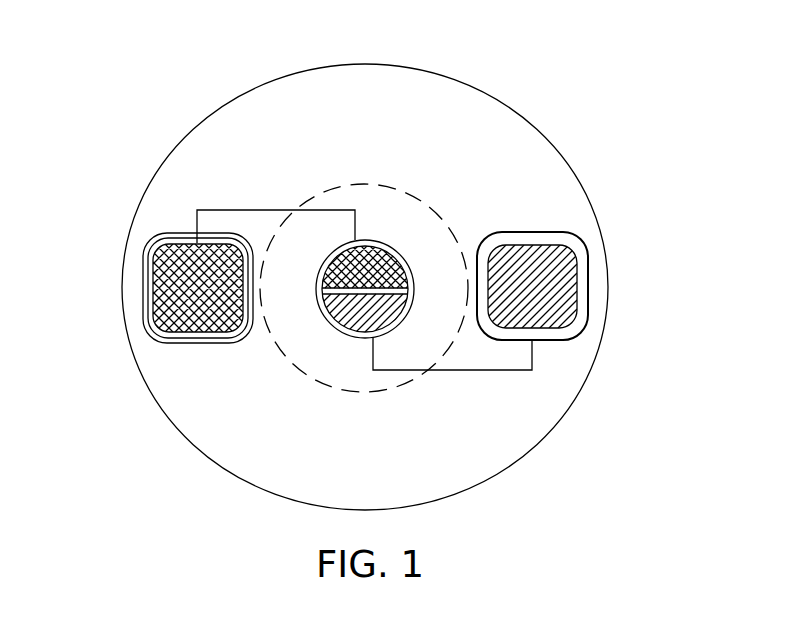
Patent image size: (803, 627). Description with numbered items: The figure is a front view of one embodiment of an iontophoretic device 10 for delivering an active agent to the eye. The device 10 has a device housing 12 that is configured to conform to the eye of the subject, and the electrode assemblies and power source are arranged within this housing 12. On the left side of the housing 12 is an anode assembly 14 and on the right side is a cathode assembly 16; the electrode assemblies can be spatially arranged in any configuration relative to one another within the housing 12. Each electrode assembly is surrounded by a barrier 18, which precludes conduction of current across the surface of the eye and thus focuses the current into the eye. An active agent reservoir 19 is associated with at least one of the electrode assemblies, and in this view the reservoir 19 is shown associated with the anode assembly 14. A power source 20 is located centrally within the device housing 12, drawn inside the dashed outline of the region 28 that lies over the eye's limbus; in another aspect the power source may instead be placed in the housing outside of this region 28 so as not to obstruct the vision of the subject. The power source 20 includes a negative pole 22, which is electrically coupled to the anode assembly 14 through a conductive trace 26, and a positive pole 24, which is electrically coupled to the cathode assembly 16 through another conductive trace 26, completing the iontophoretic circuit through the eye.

The iontophoretic device 10 is at (533, 63).
The device housing 12 is at (537, 128).
The anode assembly 14 is at (153, 252).
The cathode assembly 16 is at (570, 243).
The barrier 18 is at (168, 237).
The active agent reservoir 19 is at (150, 330).
The power source 20 is at (385, 242).
The negative pole 22 is at (403, 258).
The positive pole 24 is at (330, 322).
The conductive trace 26 is at (320, 210).
The region located over the eye's limbus 28 is at (351, 183).